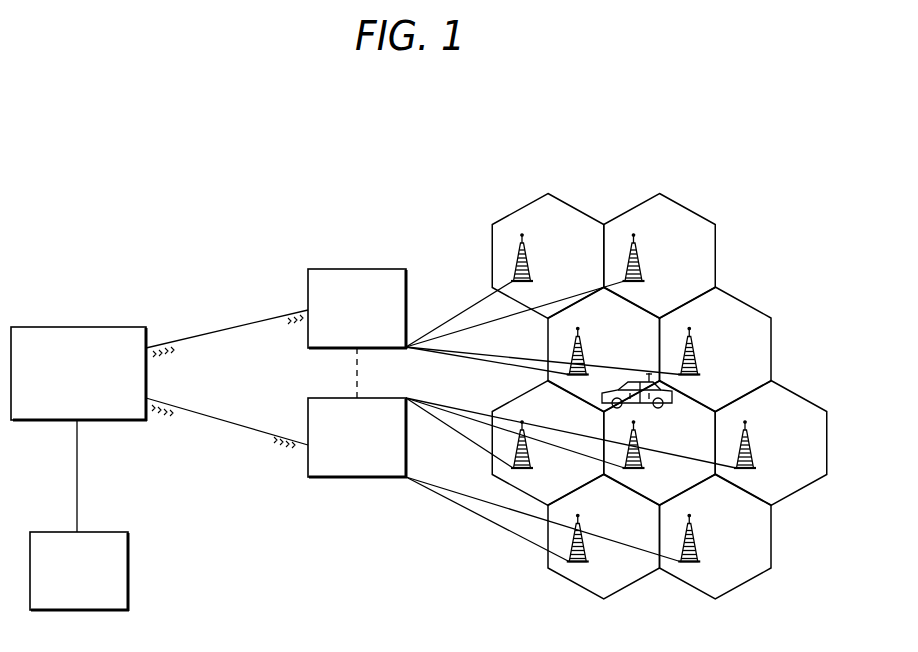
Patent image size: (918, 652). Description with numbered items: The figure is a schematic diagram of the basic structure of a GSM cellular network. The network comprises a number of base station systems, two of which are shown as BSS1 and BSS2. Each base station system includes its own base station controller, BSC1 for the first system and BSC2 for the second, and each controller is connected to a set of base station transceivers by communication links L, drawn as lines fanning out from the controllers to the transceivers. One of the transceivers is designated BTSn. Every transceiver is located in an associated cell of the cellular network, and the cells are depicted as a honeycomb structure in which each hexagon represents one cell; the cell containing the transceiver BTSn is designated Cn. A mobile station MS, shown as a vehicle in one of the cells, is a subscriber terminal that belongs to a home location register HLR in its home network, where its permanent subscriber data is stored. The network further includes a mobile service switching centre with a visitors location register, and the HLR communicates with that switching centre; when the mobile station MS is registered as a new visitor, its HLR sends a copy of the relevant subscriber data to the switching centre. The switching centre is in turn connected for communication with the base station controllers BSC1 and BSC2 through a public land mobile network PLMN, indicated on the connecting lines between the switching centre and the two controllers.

The home location register HLR is at (79, 515).
The public land mobile network PLMN is at (232, 302).
The base station system BSS2 is at (425, 217).
The base station system BSS1 is at (372, 480).
The base station controller BSC2 is at (357, 309).
The base station controller BSC1 is at (357, 438).
The communication links L is at (462, 305).
The cell Cn is at (693, 413).
The base station transceiver BTSn is at (643, 467).
The mobile station MS is at (649, 405).